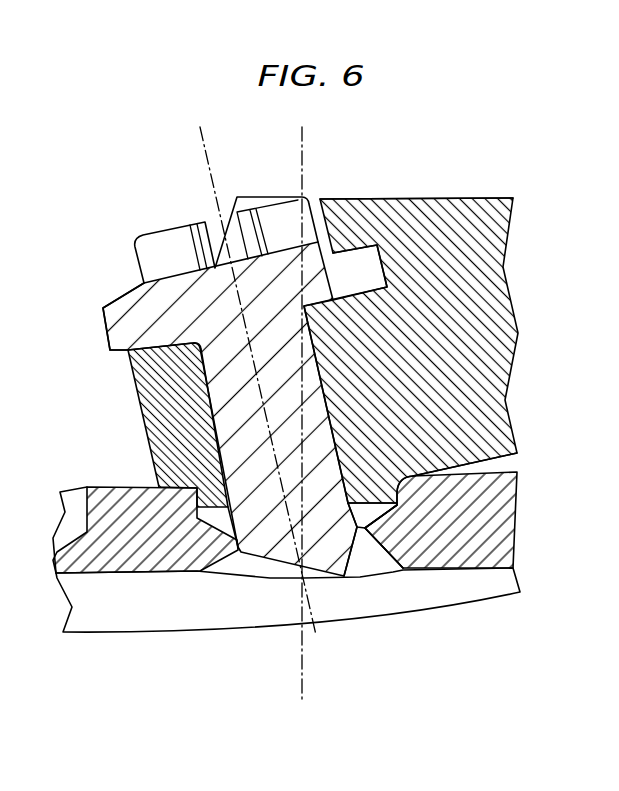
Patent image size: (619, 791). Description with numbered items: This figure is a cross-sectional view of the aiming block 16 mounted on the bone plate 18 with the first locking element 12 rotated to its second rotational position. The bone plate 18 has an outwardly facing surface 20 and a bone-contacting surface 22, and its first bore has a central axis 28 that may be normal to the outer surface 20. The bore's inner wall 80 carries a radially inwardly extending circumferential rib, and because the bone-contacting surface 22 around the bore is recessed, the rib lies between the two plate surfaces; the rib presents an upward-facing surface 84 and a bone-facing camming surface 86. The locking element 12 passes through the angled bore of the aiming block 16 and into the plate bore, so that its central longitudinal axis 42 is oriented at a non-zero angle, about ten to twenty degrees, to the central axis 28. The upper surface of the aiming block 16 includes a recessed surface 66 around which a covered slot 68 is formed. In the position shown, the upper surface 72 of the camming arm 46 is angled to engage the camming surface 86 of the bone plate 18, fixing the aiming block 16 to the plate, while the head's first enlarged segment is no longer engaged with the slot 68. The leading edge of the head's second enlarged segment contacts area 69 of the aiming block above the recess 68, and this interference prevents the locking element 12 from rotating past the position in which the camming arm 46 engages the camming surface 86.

The first locking element 12 is at (178, 309).
The aiming block 16 is at (480, 268).
The bone plate 18 is at (510, 487).
The outwardly facing surface 20 is at (470, 480).
The bone-contacting surface 22 is at (470, 573).
The central axis 28 is at (300, 689).
The central longitudinal axis 42 is at (208, 170).
The camming arm 46 is at (382, 553).
The recessed surface 66 is at (403, 198).
The covered slot 68 is at (380, 270).
The area of the aiming block above recess 69 is at (158, 352).
The upper surface of the camming arm 72 is at (370, 535).
The inner wall 80 is at (401, 482).
The upward-facing surface 84 is at (230, 528).
The bone-facing camming surface 86 is at (383, 548).